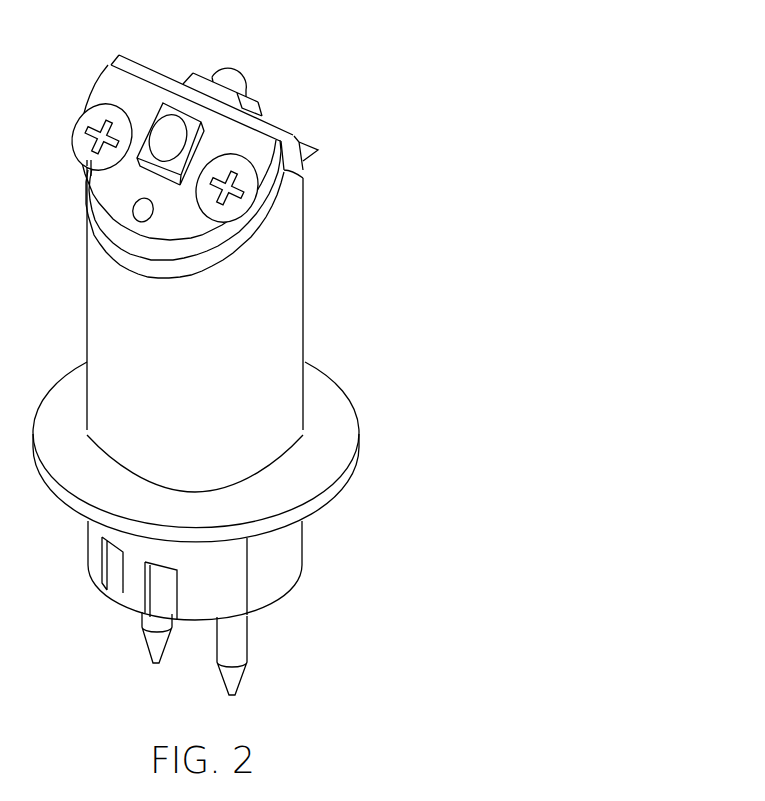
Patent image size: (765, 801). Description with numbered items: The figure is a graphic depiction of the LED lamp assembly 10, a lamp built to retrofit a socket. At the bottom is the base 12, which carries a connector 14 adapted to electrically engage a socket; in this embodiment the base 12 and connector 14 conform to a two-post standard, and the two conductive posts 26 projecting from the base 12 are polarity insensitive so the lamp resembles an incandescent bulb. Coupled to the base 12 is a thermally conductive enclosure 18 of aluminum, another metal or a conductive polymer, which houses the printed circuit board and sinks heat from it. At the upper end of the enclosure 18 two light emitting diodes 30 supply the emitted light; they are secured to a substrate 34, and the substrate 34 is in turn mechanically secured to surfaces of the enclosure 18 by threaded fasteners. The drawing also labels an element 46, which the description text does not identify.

The LED lamp assembly 10 is at (248, 361).
The base 12 is at (302, 560).
The connector 14 is at (229, 656).
The thermally conductive enclosure 18 is at (303, 331).
The posts 26 is at (147, 644).
The light emitting diodes 30 is at (231, 66).
The substrate 34 is at (294, 137).
The sleeve 46 is at (303, 237).